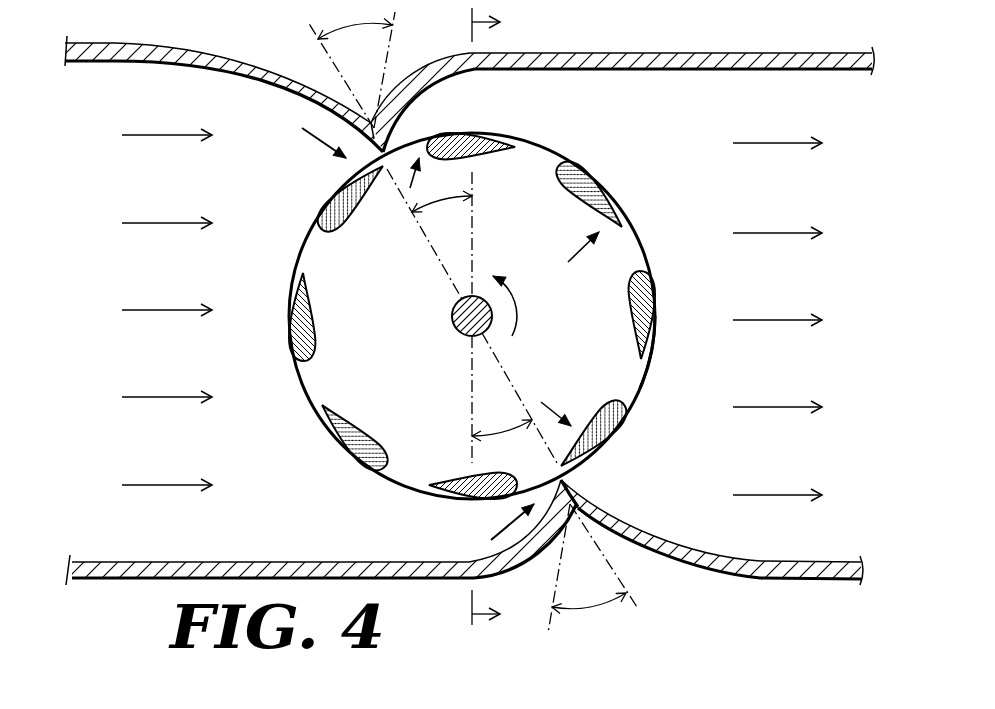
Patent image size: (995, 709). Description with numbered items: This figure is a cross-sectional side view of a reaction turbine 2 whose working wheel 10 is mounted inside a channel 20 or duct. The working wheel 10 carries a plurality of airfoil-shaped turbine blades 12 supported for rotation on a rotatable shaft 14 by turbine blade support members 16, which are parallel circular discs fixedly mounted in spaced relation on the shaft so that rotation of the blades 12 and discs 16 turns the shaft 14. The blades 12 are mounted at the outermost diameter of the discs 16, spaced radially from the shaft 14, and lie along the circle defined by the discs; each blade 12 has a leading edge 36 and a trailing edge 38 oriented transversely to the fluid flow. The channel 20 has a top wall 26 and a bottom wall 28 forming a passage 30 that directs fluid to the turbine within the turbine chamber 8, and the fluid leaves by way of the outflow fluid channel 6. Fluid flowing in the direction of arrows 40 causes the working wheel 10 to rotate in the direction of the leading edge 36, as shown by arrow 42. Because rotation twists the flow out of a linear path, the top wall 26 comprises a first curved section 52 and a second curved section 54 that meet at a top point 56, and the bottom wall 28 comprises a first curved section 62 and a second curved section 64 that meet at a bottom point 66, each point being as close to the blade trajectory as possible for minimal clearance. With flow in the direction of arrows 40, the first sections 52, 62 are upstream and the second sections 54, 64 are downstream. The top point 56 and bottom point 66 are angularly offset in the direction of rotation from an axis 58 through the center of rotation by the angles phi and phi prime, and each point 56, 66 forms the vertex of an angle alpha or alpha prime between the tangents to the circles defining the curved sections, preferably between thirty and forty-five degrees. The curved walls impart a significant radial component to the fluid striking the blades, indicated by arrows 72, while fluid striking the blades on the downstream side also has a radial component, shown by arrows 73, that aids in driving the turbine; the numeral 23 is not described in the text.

The reaction turbine 2 is at (611, 638).
The outflow fluid channel 6 is at (799, 107).
The turbine chamber 8 is at (632, 128).
The working wheel 10 is at (624, 222).
The turbine blade 12 is at (490, 156).
The rotatable shaft 14 is at (458, 314).
The turbine blade support member 16 is at (632, 389).
The channel 20 is at (397, 591).
The lower downstream wall section 23 is at (742, 566).
The top wall 26 is at (131, 50).
The bottom wall 28 is at (163, 572).
The passage 30 is at (247, 531).
The leading edge 36 is at (386, 458).
The trailing edge 38 is at (324, 405).
The arrows indicating fluid flow direction 40 is at (162, 134).
The arrow indicating direction of rotation 42 is at (514, 302).
The first curved section of top wall 52 is at (299, 92).
The second curved section of top wall 54 is at (438, 69).
The top point 56 is at (394, 136).
The axis 58 is at (476, 250).
The first curved section of bottom wall 62 is at (508, 566).
The second curved section of bottom wall 64 is at (740, 565).
The bottom point 66 is at (574, 476).
The arrows indicating radial fluid component 72 is at (324, 146).
The arrows indicating downstream radial fluid component 73 is at (415, 179).